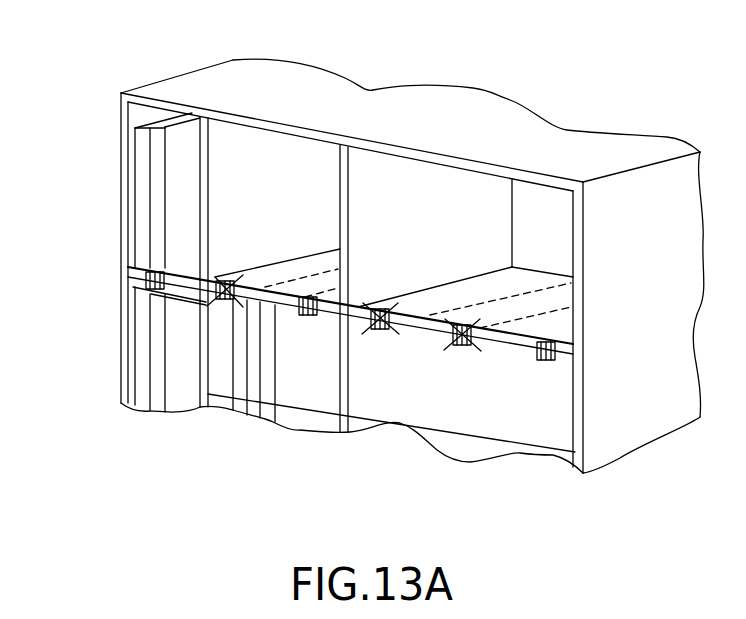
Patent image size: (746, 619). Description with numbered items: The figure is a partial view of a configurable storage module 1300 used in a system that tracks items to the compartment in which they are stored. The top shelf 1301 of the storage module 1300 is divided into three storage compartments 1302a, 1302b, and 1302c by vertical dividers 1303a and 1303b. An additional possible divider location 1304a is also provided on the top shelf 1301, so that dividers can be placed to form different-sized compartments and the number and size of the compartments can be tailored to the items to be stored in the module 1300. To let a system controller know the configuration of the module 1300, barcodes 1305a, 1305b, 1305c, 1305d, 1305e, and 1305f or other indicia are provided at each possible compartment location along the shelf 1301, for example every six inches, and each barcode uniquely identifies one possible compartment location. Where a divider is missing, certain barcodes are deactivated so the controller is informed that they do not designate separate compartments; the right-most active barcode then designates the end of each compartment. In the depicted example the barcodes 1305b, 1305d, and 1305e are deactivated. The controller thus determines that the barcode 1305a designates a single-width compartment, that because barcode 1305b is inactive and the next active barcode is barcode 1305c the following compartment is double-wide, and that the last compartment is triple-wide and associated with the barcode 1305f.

The storage module 1300 is at (597, 74).
The top shelf 1301 is at (133, 272).
The storage compartment 1302a is at (135, 116).
The storage compartment 1302b is at (226, 142).
The storage compartment 1302c is at (403, 177).
The vertical divider 1303a is at (203, 137).
The vertical divider 1303b is at (347, 155).
The additional possible divider location 1304a is at (313, 275).
The barcode 1305a is at (152, 290).
The barcode 1305b is at (216, 301).
The barcode 1305c is at (300, 318).
The barcode 1305d is at (371, 334).
The barcode 1305e is at (456, 348).
The barcode 1305f is at (538, 362).